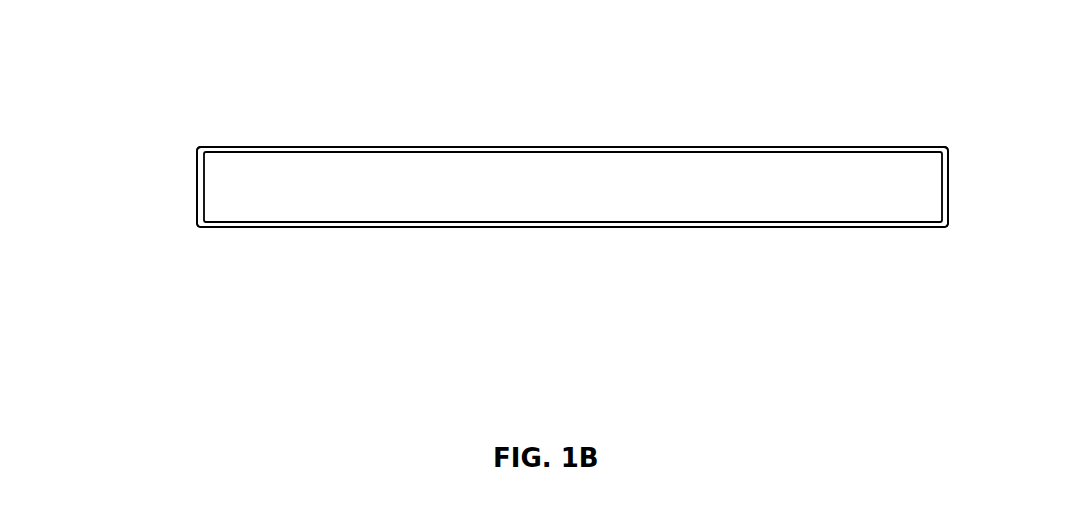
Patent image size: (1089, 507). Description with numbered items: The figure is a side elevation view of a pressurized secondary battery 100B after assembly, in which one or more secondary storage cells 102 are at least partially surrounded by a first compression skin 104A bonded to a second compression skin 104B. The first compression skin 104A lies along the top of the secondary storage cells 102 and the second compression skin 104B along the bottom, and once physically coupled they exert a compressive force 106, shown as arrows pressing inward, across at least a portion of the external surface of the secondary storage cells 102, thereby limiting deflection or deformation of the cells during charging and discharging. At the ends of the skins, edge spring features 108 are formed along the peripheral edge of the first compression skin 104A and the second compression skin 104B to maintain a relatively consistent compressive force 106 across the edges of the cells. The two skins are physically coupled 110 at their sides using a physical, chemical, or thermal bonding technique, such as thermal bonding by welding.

The pressurized secondary battery 100B is at (1003, 31).
The secondary storage cell 102 is at (878, 205).
The first compression skin 104A is at (737, 147).
The second compression skin 104B is at (740, 228).
The compressive force 106 is at (533, 145).
The edge spring feature 108 is at (220, 138).
The physical coupling 110 is at (186, 187).